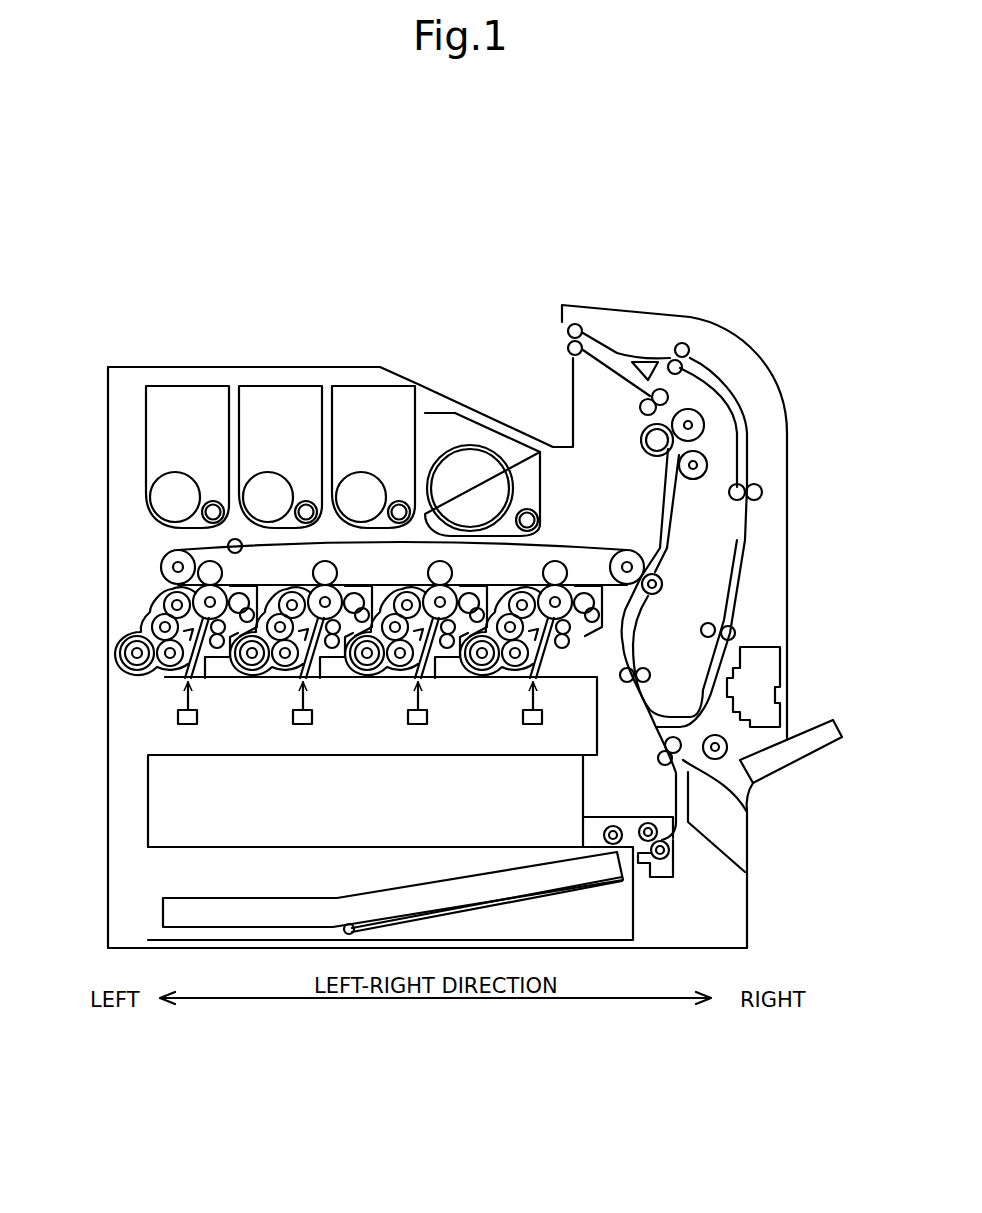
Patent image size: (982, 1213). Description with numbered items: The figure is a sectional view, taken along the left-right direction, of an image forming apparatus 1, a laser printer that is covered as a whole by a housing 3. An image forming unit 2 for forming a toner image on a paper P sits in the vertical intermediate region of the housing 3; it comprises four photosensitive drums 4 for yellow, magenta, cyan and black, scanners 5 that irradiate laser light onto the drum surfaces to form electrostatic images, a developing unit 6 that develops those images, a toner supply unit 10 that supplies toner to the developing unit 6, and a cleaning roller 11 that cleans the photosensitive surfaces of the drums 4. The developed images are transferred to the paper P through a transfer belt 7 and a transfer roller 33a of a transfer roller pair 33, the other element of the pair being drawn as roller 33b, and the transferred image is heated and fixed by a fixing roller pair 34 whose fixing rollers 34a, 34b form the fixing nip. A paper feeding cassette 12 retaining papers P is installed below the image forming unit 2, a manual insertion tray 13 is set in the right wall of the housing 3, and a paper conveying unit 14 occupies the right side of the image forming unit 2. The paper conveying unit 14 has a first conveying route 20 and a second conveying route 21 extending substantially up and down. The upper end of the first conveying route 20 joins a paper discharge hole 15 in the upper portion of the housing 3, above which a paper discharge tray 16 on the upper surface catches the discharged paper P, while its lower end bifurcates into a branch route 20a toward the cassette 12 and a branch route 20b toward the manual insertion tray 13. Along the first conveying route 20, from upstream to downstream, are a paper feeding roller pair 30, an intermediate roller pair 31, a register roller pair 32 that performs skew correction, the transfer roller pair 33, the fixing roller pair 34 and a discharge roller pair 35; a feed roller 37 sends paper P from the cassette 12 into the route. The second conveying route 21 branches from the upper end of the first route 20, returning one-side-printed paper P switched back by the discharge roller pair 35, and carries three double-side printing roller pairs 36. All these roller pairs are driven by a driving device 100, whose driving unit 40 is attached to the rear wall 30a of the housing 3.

The image forming apparatus 1 is at (125, 352).
The image forming unit 2 is at (138, 590).
The housing 3 is at (108, 500).
The photosensitive drums 4 is at (226, 590).
The scanners 5 is at (197, 722).
The developing unit 6 is at (162, 673).
The transfer belt 7 is at (205, 546).
The toner supply unit 10 is at (213, 500).
The cleaning roller 11 is at (248, 612).
The paper feeding cassette 12 is at (633, 917).
The manual insertion tray 13 is at (790, 773).
The paper conveying unit 14 is at (640, 335).
The paper discharge hole 15 is at (562, 323).
The paper discharge tray 16 is at (483, 410).
The first conveying route 20 is at (640, 397).
The branch route 20a is at (690, 826).
The branch route 20b is at (710, 777).
The second conveying route 21 is at (745, 445).
The paper feeding roller pair 30 is at (675, 855).
The rear wall 30a is at (787, 562).
The intermediate roller pair 31 is at (660, 768).
The register roller pair 32 is at (650, 668).
The transfer roller pair 33 is at (640, 550).
The transfer roller 33a is at (664, 556).
The secondary transfer roller 33b is at (662, 583).
The fixing roller pair 34 is at (640, 424).
The fixing roller 34a is at (646, 428).
The fixing roller 34b is at (682, 460).
The discharge roller pair 35 is at (567, 343).
The double-side printing roller pairs 36 is at (692, 352).
The feed roller 37 is at (605, 833).
The driving unit 40 is at (782, 680).
The driving device 100 is at (770, 645).
The paper P is at (478, 870).